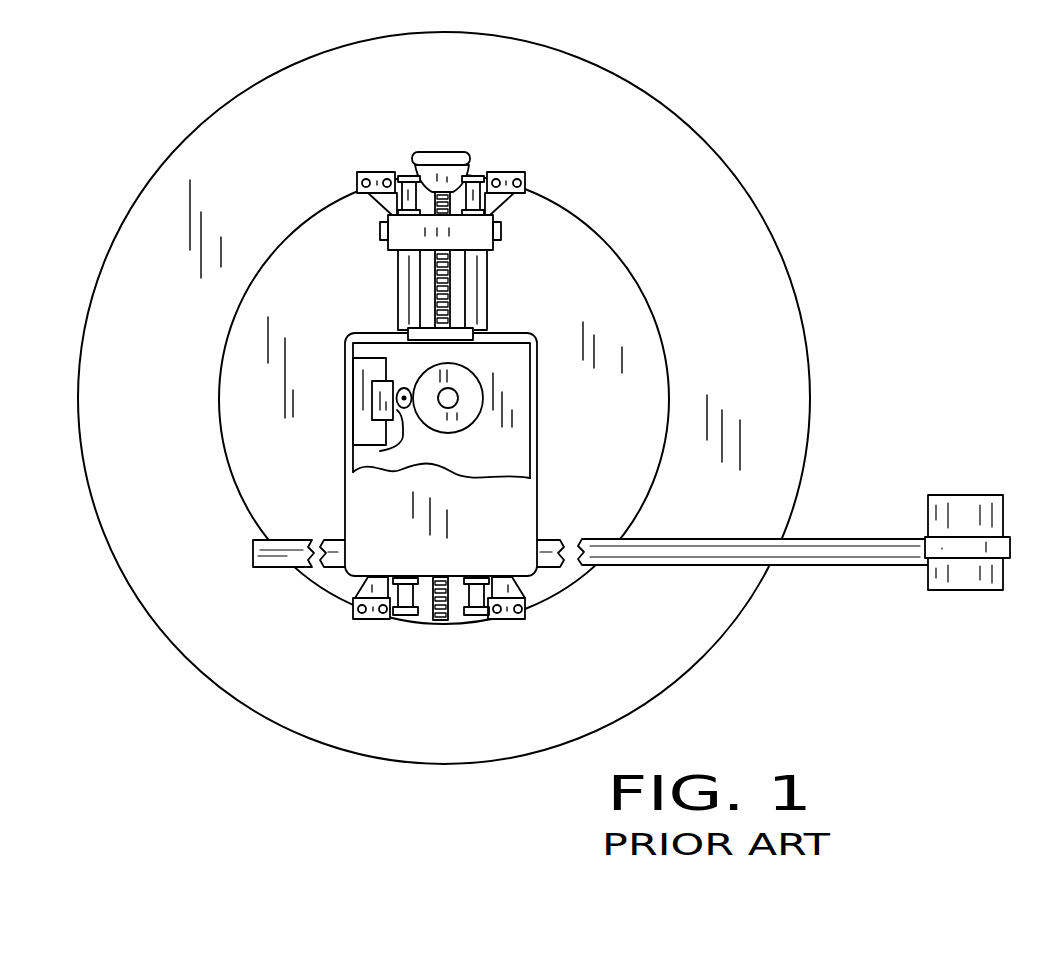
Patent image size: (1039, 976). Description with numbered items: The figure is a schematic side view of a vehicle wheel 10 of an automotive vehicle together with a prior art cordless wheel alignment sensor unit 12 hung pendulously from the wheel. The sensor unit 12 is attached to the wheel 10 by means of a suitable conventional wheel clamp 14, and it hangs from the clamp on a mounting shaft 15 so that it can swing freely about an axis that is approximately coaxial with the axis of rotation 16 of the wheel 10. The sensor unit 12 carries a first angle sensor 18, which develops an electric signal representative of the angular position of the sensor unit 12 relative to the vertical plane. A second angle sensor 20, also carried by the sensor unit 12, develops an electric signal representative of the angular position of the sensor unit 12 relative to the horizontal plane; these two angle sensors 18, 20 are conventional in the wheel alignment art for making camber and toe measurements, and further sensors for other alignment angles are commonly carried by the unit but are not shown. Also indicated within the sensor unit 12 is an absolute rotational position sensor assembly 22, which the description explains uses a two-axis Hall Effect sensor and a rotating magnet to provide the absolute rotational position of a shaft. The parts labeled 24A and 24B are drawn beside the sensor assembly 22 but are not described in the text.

The vehicle wheel 10 is at (642, 628).
The vehicle wheel alignment sensor unit 12 is at (543, 446).
The wheel clamp 14 is at (494, 274).
The mounting shaft 15 is at (462, 379).
The axis of rotation 16 is at (460, 399).
The first angle sensor 18 is at (365, 400).
The second angle sensor 20 is at (941, 490).
The absolute rotational position sensor assembly 22 is at (380, 403).
The first fitting 24A is at (412, 385).
The second fitting 24B is at (380, 451).